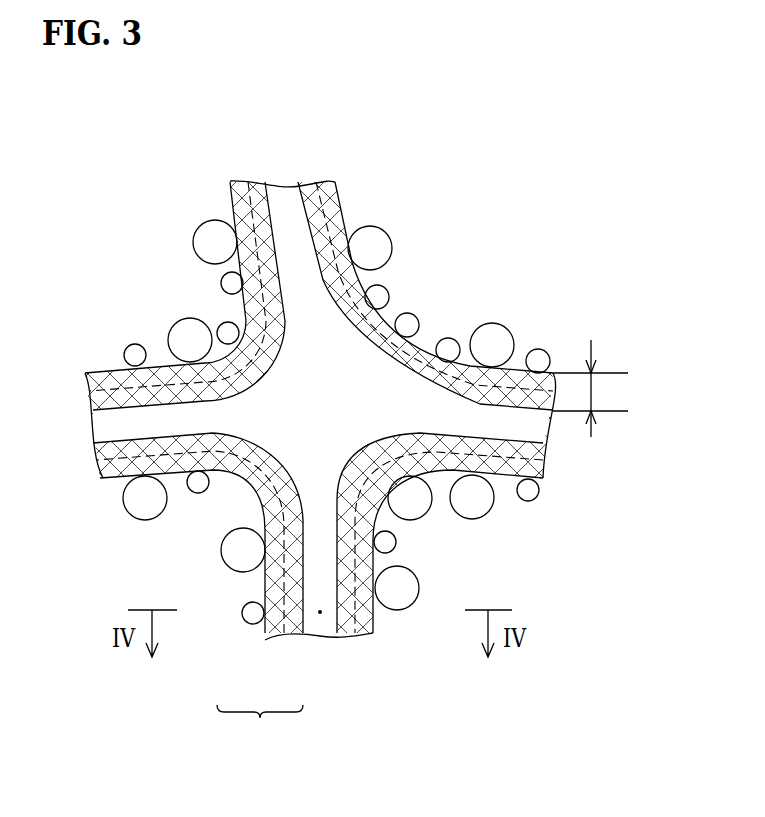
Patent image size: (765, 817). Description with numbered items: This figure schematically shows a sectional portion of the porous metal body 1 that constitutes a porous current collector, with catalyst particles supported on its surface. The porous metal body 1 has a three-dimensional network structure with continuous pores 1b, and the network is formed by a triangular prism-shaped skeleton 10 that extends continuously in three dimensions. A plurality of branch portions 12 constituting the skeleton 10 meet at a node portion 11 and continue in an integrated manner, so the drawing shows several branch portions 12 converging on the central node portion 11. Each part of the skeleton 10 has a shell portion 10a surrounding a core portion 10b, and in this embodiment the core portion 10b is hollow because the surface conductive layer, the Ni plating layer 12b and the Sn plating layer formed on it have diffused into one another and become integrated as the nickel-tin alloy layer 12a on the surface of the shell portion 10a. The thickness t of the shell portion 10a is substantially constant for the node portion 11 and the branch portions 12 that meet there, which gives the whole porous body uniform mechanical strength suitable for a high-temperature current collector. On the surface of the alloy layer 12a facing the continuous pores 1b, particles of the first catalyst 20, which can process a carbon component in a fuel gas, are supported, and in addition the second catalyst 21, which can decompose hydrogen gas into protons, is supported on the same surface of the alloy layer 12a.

The porous metal body 1 is at (322, 445).
The skeleton 10 is at (304, 492).
The shell portion 10a is at (260, 733).
The core portion 10b is at (320, 612).
The node portion 11 is at (245, 483).
The branch portion 12 is at (304, 441).
The alloy layer 12a is at (278, 636).
The Ni plating layer 12b is at (298, 636).
The continuous pores 1b is at (178, 284).
The first catalyst 20 is at (535, 349).
The second catalyst 21 is at (493, 324).
The thickness of the shell portion t is at (596, 388).